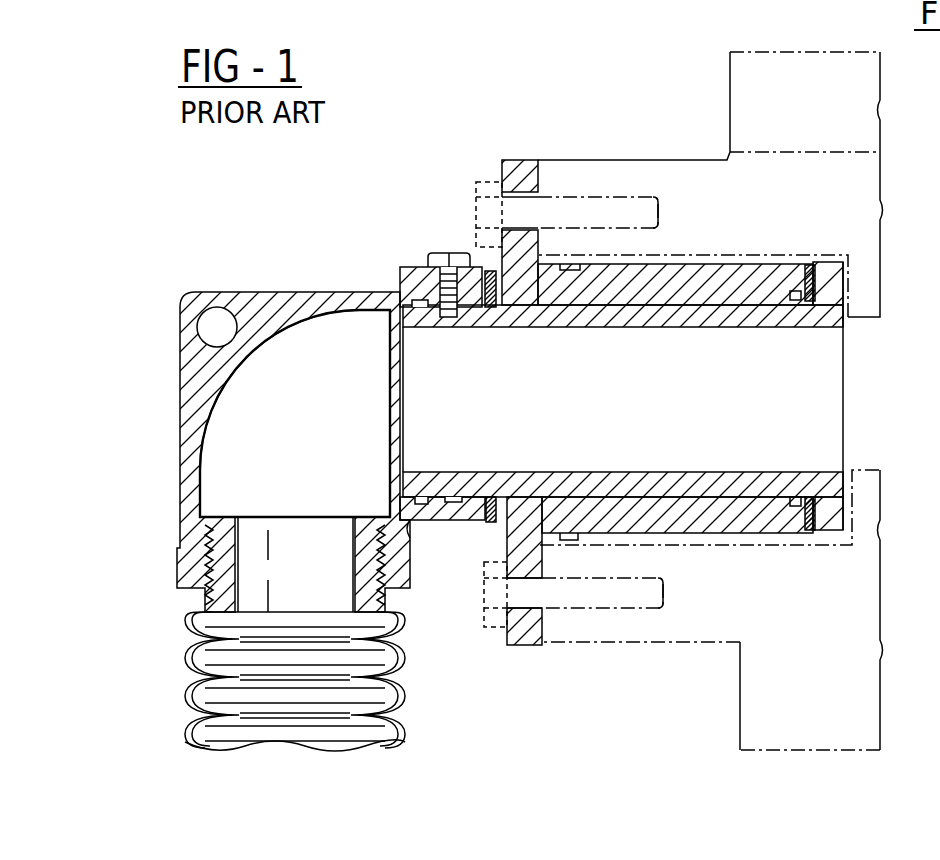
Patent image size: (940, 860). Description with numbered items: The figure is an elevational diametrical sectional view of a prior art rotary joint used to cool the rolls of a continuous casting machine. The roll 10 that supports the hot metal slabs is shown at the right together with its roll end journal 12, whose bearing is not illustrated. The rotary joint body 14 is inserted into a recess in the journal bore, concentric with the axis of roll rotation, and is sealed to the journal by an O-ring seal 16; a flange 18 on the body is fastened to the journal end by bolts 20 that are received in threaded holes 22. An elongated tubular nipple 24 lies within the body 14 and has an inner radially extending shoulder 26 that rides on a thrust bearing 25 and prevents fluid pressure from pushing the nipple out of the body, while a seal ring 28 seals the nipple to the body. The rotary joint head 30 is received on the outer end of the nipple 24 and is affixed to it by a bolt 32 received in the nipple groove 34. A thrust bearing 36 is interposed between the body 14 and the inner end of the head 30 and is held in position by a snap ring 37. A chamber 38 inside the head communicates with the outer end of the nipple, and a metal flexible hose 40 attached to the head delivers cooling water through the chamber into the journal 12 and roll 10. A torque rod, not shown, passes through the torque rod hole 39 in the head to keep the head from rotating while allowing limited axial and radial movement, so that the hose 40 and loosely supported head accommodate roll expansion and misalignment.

The roll 10 is at (733, 136).
The roll end journal 12 is at (683, 640).
The rotary joint body 14 is at (716, 290).
The O-ring seal 16 is at (566, 540).
The flange 18 is at (520, 175).
The bolt 20 is at (478, 212).
The threaded hole 22 is at (608, 195).
The tubular nipple 24 is at (600, 318).
The thrust bearing 25 is at (814, 300).
The inner radially extending shoulder 26 is at (832, 295).
The seal ring 28 is at (792, 300).
The rotary joint head 30 is at (192, 420).
The bolt 32 is at (448, 262).
The nipple groove 34 is at (446, 522).
The thrust bearing 36 is at (493, 498).
The snap ring 37 is at (490, 308).
The chamber 38 is at (316, 445).
The torque rod hole 39 is at (220, 327).
The metal flexible hose 40 is at (335, 715).